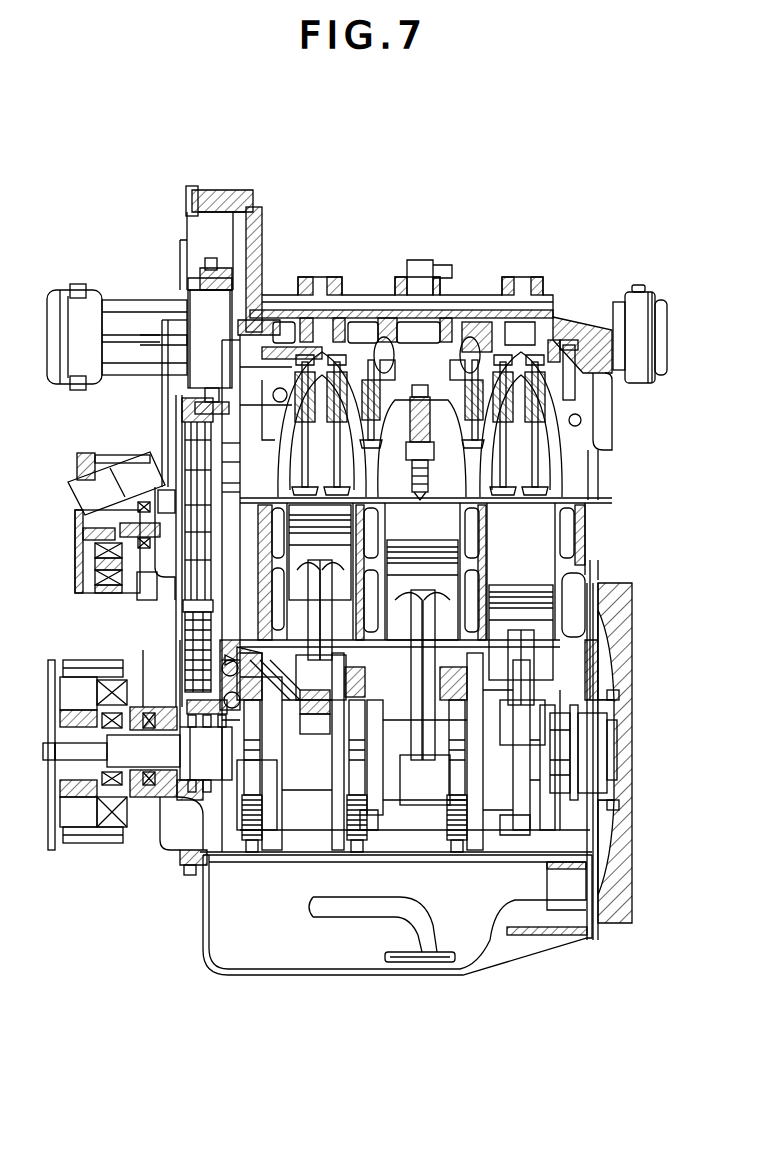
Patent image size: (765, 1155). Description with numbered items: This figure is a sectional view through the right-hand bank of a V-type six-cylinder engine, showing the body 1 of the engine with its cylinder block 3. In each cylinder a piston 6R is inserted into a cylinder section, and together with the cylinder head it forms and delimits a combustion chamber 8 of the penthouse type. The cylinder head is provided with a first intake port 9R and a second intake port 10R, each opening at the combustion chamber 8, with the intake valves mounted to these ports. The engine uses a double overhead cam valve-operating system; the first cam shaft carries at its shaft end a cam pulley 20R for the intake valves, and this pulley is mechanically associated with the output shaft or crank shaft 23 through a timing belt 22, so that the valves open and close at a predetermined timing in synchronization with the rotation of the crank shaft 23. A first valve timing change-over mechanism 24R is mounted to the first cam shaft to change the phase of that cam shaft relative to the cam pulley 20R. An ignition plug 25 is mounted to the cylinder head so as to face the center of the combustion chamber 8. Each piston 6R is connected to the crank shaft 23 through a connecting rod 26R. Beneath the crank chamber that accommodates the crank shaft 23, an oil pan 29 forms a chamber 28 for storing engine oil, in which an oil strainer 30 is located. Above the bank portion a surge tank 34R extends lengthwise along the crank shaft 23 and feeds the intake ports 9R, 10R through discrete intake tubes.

The body of the engine 1 is at (636, 488).
The cylinder block 3 is at (590, 566).
The piston 6R is at (200, 557).
The combustion chamber 8 is at (421, 655).
The first intake port 9R is at (270, 345).
The second intake port 10R is at (333, 347).
The cam pulley 20R is at (188, 274).
The timing belt 22 is at (190, 413).
The output shaft (crank shaft) 23 is at (560, 727).
The first valve timing change-over mechanism 24R is at (197, 363).
The ignition plug 25 is at (413, 398).
The connecting rod 26R is at (185, 610).
The chamber for storing engine oil 28 is at (278, 949).
The oil pan 29 is at (340, 976).
The oil strainer 30 is at (460, 950).
The surge tank 34R is at (114, 302).